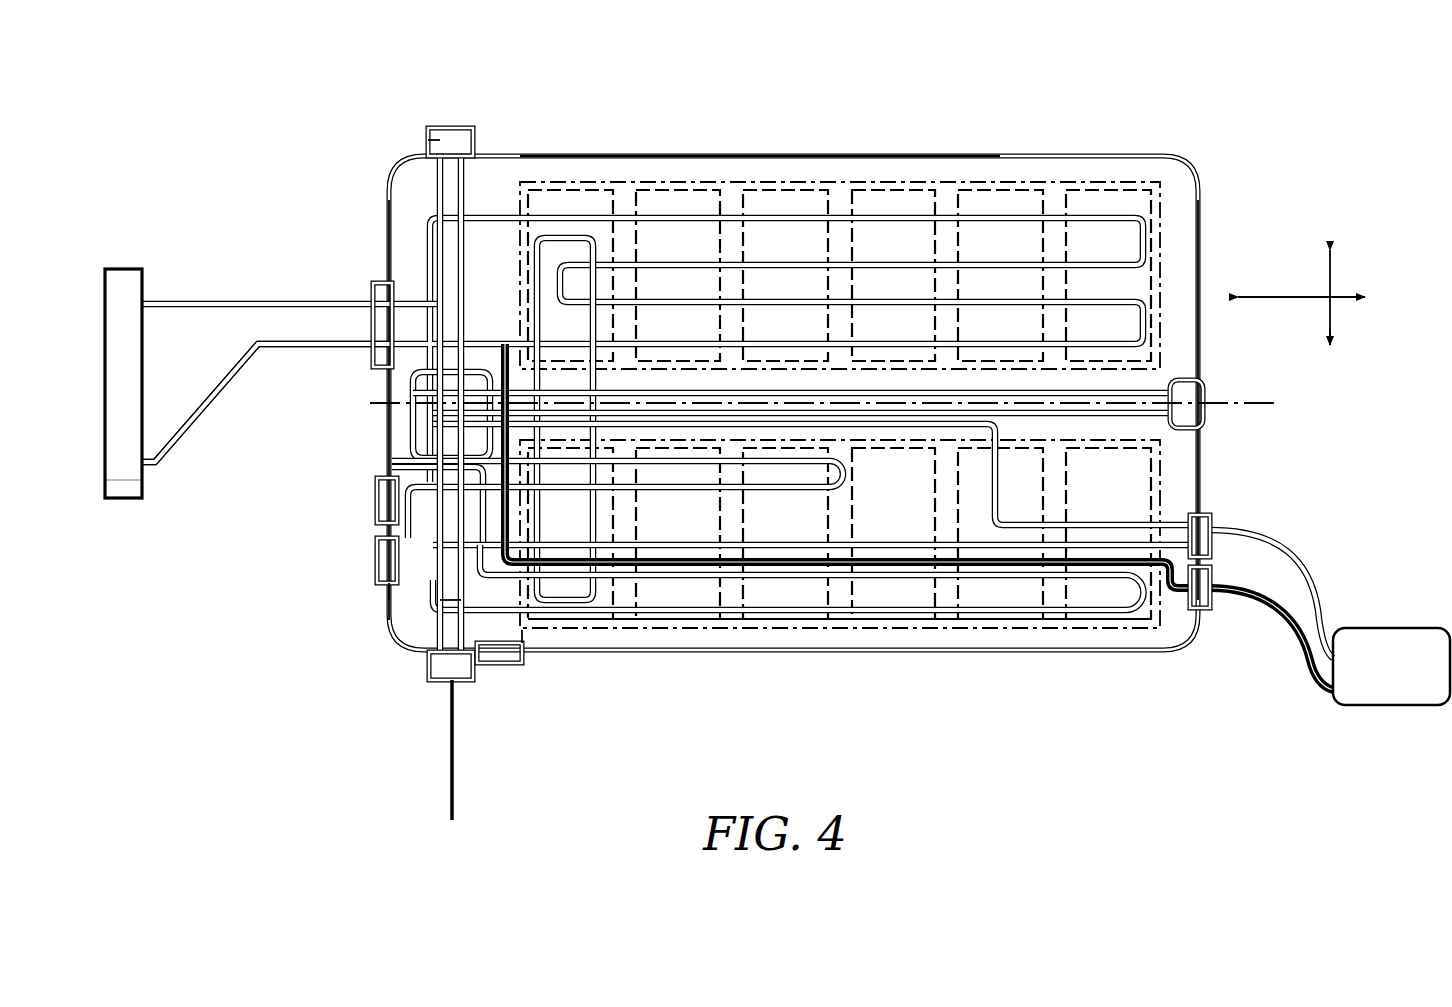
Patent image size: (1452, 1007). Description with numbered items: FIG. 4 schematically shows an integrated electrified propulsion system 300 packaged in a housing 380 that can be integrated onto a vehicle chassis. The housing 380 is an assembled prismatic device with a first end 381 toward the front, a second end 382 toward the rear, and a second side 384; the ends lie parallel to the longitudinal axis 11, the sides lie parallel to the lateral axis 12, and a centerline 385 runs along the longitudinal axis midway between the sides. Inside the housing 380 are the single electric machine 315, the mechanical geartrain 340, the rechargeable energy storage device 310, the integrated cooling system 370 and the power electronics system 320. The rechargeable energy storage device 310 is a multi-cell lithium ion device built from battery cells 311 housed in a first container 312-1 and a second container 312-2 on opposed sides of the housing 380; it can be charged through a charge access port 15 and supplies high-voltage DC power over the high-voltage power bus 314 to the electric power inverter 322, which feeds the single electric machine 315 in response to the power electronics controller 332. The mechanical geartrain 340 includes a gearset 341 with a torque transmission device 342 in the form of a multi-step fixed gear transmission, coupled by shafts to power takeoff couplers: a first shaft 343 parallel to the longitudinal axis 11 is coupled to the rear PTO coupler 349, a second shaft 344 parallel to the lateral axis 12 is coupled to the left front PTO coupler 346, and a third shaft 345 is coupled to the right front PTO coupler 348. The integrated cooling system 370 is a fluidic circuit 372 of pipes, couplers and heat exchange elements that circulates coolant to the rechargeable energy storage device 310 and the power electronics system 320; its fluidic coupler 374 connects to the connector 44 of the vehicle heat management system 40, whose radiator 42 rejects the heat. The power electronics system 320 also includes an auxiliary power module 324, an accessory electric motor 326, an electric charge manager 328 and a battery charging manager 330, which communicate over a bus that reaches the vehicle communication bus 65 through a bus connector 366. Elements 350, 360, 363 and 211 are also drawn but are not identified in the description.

The integrated electrified propulsion system 300 is at (775, 152).
The second side 384 is at (500, 152).
The battery cells 311 is at (665, 188).
The first container 312-1 is at (1117, 184).
The second container 312-2 is at (1125, 630).
The left front PTO coupler 346 is at (428, 140).
The second shaft 344 is at (443, 186).
The first end 381 is at (386, 190).
The rechargeable energy storage device 310 is at (512, 253).
The integrated cooling system 370 is at (410, 300).
The heat management system 40 is at (123, 266).
The fluid/air heat exchanger (radiator) 42 is at (120, 500).
The connector 44 is at (291, 361).
The fluidic coupler 374 is at (373, 325).
The mechanical geartrain 340 is at (366, 415).
The gearset 341 is at (366, 415).
The torque transmission device 342 is at (405, 435).
The single electric machine 315 is at (386, 466).
The first shaft 343 is at (377, 500).
The pump 350 is at (377, 556).
The heater 360 is at (377, 576).
The third shaft 345 is at (450, 628).
The right front PTO coupler 348 is at (437, 682).
The bus connector 366 is at (497, 665).
The fitting 363 is at (522, 645).
The cell bottoms 211 is at (590, 630).
The power electronics system 320 is at (811, 678).
The electric power inverter 322 is at (811, 678).
The auxiliary power module 324 is at (811, 678).
The accessory electric motor 326 is at (811, 678).
The electric charge manager 328 is at (811, 678).
The battery charging manager 330 is at (811, 678).
The power electronics controller 332 is at (560, 630).
The vehicle communication bus 65 is at (452, 796).
The housing 380 is at (1208, 200).
The second end 382 is at (1183, 242).
The longitudinal axis 11 is at (1330, 262).
The lateral axis 12 is at (1332, 322).
The centerline 385 is at (1262, 404).
The rear PTO coupler 349 is at (1206, 416).
The charge access port 15 is at (1410, 628).
The high-voltage power bus 314 is at (760, 690).
The fluidic circuit 372 is at (760, 722).